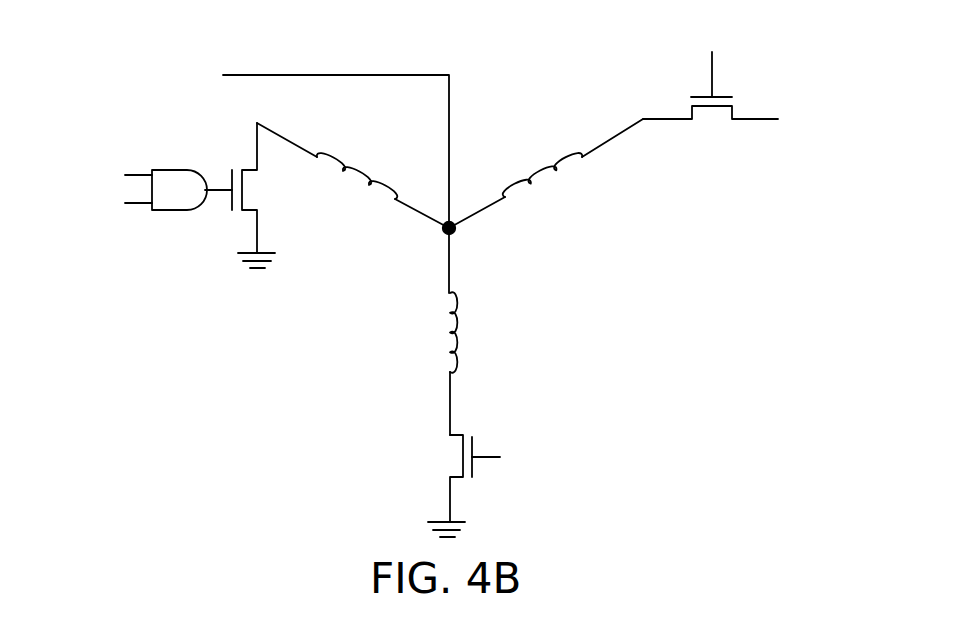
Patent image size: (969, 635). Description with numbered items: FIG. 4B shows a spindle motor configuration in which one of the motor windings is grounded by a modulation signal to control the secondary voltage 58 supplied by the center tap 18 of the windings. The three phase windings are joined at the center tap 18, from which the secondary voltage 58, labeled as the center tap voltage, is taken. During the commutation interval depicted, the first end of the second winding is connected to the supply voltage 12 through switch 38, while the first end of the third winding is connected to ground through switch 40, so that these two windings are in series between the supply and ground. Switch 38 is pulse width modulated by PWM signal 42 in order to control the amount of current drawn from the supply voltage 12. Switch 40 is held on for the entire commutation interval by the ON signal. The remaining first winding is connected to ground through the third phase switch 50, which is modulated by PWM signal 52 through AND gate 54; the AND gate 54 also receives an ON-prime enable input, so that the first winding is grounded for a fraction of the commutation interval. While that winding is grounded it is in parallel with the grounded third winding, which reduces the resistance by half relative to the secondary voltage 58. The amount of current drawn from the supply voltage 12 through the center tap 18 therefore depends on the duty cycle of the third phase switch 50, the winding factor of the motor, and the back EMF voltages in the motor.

The supply voltage 12 is at (756, 122).
The center tap 18 is at (466, 232).
The switch 38 is at (708, 129).
The switch 40 is at (478, 422).
The PWM signal 42 is at (708, 69).
The third phase switch 50 is at (270, 188).
The PWM signal 52 is at (137, 171).
The AND gate 54 is at (171, 213).
The secondary voltage 58 is at (233, 78).